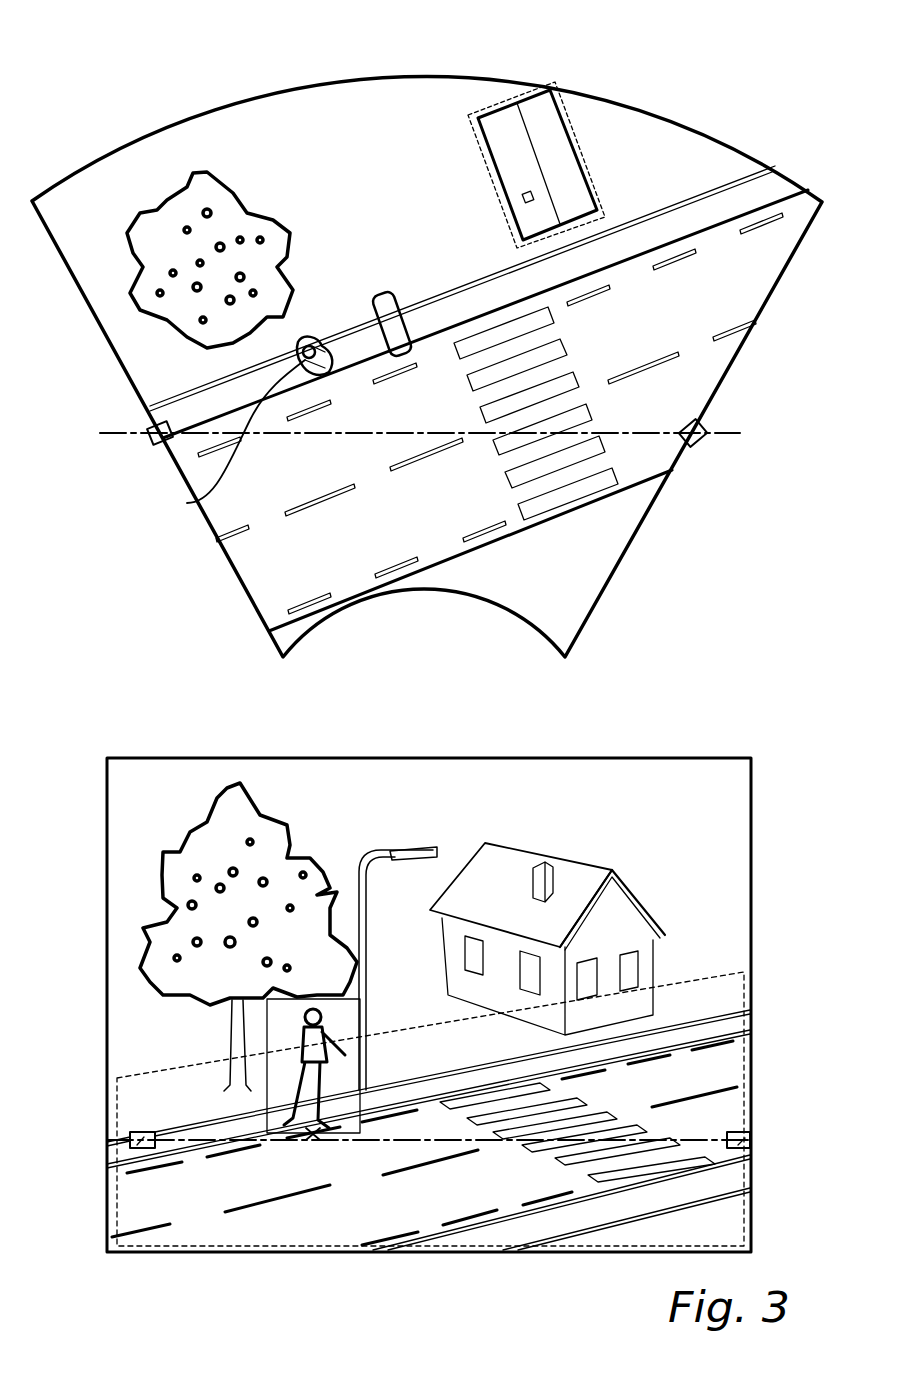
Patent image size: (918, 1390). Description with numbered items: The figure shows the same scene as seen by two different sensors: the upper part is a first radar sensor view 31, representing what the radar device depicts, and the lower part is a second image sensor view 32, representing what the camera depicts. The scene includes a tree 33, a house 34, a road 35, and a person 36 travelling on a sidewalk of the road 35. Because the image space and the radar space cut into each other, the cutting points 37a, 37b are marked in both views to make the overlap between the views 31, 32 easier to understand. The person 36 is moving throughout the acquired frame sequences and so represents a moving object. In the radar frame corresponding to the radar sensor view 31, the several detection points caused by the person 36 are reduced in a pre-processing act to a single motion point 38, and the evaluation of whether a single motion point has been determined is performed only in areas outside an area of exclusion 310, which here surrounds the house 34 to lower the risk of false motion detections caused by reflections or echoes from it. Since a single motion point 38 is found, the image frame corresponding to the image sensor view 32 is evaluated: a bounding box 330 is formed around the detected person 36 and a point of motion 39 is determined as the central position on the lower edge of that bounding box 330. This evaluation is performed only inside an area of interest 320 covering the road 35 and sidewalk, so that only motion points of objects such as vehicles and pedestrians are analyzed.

The first radar sensor view 31 is at (680, 117).
The second image sensor view 32 is at (663, 758).
The tree 33 is at (167, 247).
The house 34 is at (545, 133).
The road 35 is at (693, 377).
The person 36 is at (313, 380).
The cutting point 37a is at (160, 445).
The cutting point 37b is at (695, 448).
The single motion point 38 is at (230, 438).
The point of motion 39 is at (313, 1135).
The area of exclusion 310 is at (512, 98).
The area of interest 320 is at (728, 990).
The bounding box 330 is at (367, 1047).